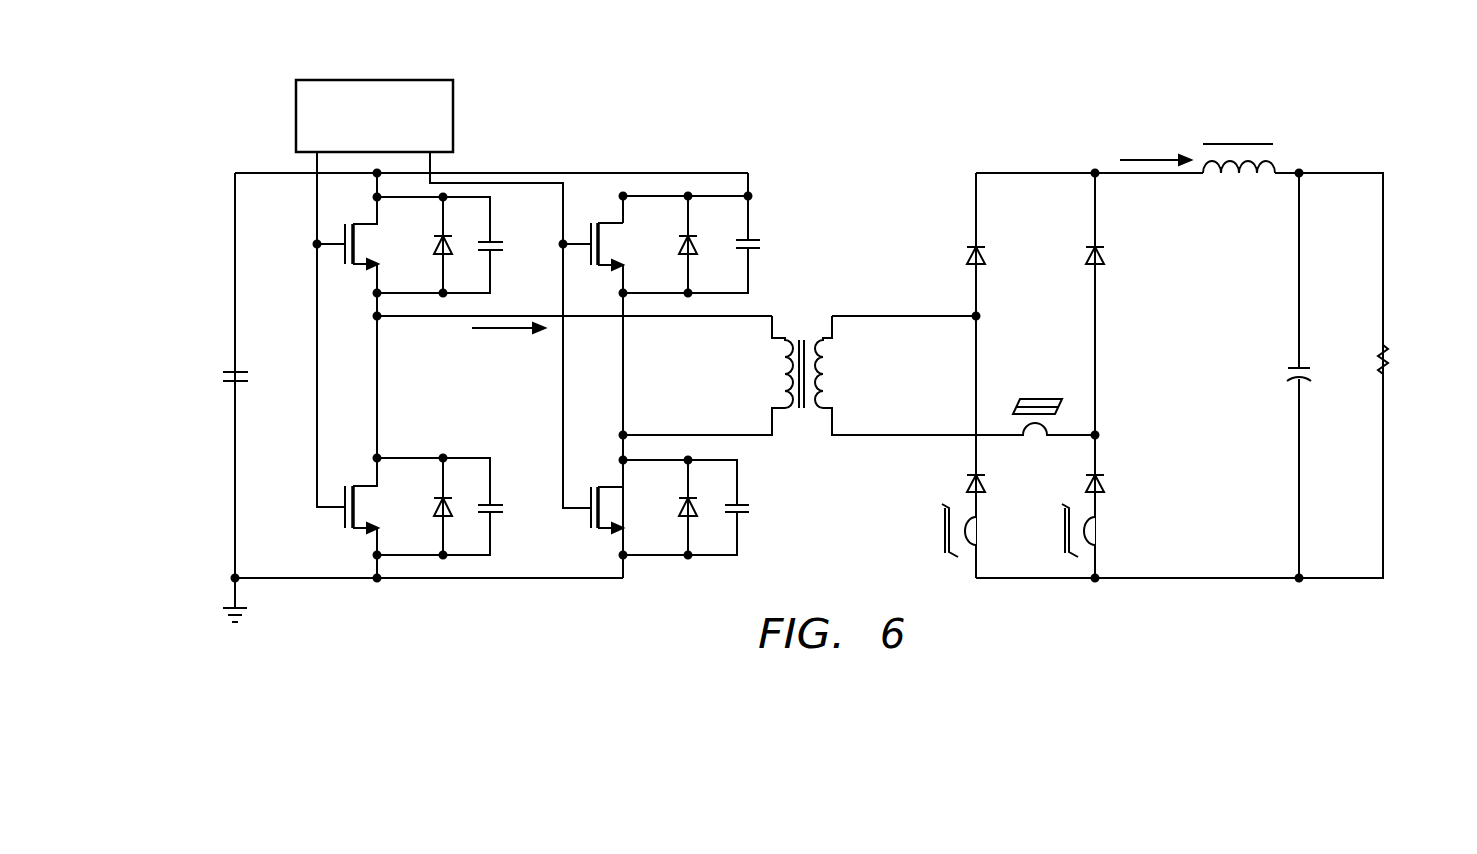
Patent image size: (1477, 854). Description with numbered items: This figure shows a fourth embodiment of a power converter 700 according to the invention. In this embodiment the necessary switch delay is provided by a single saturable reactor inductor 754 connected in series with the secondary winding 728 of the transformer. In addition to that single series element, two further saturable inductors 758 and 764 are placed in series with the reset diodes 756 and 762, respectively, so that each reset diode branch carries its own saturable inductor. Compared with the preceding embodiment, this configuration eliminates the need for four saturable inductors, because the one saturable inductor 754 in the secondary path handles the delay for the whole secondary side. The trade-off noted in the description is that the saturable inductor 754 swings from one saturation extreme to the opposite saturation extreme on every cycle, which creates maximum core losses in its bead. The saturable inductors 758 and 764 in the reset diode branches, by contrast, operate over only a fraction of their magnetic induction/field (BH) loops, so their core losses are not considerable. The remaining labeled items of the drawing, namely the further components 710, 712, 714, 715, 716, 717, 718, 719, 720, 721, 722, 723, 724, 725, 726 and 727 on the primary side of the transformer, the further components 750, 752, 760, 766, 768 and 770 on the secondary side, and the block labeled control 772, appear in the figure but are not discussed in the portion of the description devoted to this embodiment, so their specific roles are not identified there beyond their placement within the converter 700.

The power converter 700 is at (796, 130).
The primary side circuit 710 is at (250, 169).
The input capacitor 712 is at (249, 377).
The first switch transistor 714 is at (343, 258).
The second switch transistor 715 is at (342, 516).
The third switch transistor 716 is at (589, 255).
The fourth switch transistor 717 is at (586, 517).
The diode of first switch 718 is at (438, 246).
The diode of second switch 719 is at (438, 510).
The diode of third switch 720 is at (683, 246).
The diode of fourth switch 721 is at (684, 510).
The capacitor of first switch 722 is at (505, 247).
The capacitor of second switch 723 is at (505, 509).
The capacitor of third switch 724 is at (762, 246).
The capacitor of fourth switch 725 is at (750, 508).
The transformer core 726 is at (803, 338).
The transformer primary winding 727 is at (780, 337).
The secondary winding 728 is at (823, 410).
The secondary side circuit 750 is at (1372, 162).
The rectifier diode 752 is at (968, 252).
The saturable reactor inductor 754 is at (1040, 398).
The reset diode 756 is at (1010, 476).
The saturable inductor 758 is at (942, 530).
The rectifier diode 760 is at (1130, 247).
The reset diode 762 is at (1130, 476).
The saturable inductor 764 is at (1062, 530).
The output inductor 766 is at (1278, 163).
The output capacitor 768 is at (1286, 373).
The load resistor 770 is at (1392, 352).
The control circuit 772 is at (380, 80).